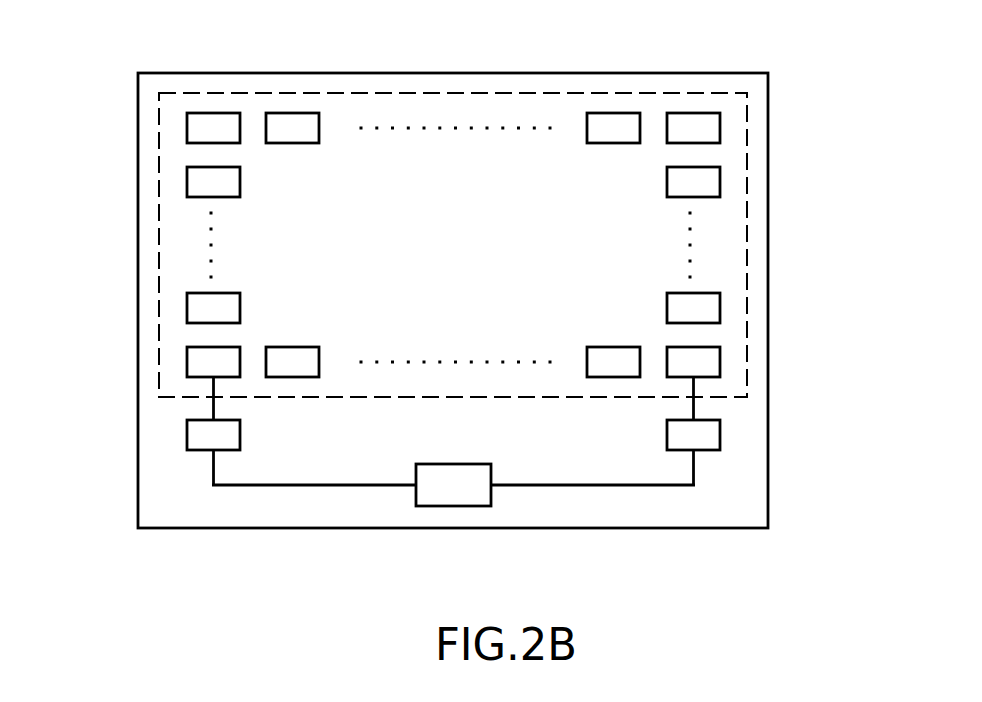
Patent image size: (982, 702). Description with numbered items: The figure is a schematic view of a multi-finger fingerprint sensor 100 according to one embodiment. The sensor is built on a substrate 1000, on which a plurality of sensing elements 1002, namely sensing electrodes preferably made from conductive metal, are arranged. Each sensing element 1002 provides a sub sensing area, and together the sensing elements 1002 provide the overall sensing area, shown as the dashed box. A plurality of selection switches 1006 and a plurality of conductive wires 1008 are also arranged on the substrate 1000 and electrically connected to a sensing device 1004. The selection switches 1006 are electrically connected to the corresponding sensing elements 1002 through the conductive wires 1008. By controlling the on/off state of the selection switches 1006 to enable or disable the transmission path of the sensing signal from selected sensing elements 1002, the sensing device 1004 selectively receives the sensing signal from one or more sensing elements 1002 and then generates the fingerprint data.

The multi-finger fingerprint sensor 100 is at (434, 43).
The substrate 1000 is at (751, 484).
The sensing element 1002 is at (197, 131).
The sensing device 1004 is at (463, 494).
The selection switch 1006 is at (200, 432).
The conductive wire 1008 is at (258, 486).